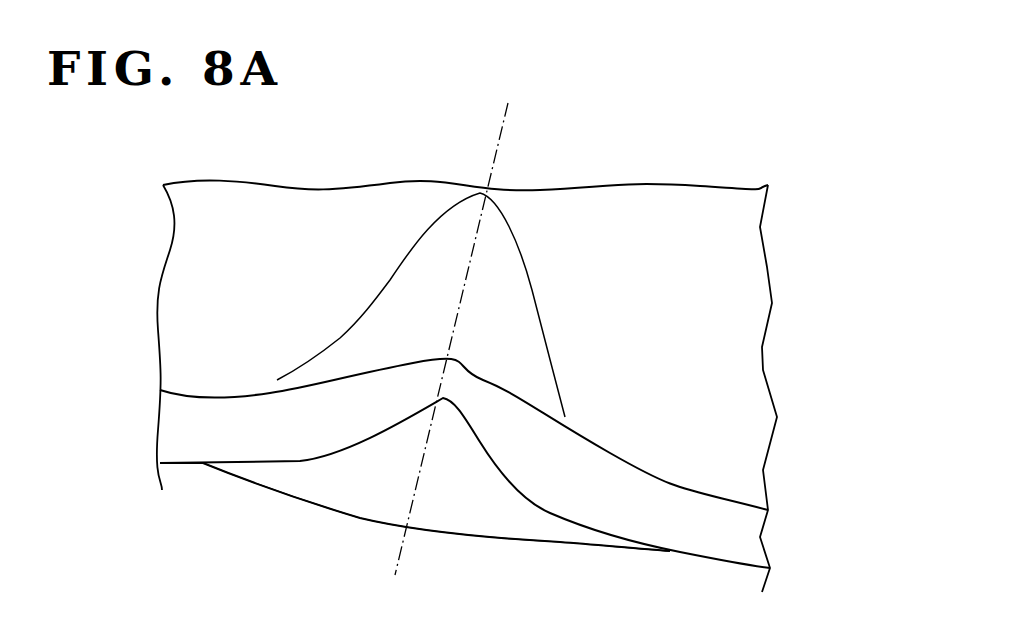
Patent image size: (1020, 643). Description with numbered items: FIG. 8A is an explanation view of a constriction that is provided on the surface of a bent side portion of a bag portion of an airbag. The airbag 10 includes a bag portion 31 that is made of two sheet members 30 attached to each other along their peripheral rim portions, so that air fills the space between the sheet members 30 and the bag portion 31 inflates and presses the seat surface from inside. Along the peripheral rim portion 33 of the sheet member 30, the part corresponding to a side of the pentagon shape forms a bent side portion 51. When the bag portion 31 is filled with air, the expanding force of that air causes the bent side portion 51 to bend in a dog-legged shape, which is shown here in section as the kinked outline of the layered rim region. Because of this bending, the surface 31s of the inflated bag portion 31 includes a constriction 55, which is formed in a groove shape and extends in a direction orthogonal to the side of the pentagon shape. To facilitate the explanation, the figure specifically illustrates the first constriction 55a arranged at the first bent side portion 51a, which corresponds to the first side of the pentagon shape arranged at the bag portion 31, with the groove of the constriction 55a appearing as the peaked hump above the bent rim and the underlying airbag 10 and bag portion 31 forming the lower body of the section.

The surface 31s is at (465, 362).
The sheet member 30 is at (595, 208).
The peripheral rim portion 33 is at (465, 463).
The bent side portion 51 is at (465, 463).
The first bent side portion 51a is at (610, 455).
The constriction 55 is at (401, 305).
The first constriction 55a is at (401, 298).
The airbag 10 is at (415, 527).
The bag portion 31 is at (244, 526).